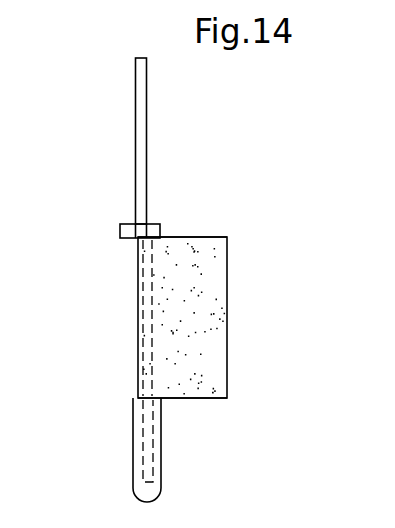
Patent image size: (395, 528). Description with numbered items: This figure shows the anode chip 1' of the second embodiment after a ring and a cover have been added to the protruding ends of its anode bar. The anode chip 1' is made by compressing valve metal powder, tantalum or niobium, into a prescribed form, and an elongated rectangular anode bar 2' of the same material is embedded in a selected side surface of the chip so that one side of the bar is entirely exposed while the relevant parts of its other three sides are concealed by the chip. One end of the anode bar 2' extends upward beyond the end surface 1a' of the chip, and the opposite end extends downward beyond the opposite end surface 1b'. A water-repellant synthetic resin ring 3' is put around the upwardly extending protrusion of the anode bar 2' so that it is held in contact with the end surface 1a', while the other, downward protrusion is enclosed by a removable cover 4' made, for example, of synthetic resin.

The anode chip 1' is at (216, 317).
The end surface 1a' is at (211, 196).
The opposite end surface 1b' is at (215, 412).
The anode bar 2' is at (177, 270).
The ring 3' is at (99, 209).
The removable cover 4' is at (103, 450).